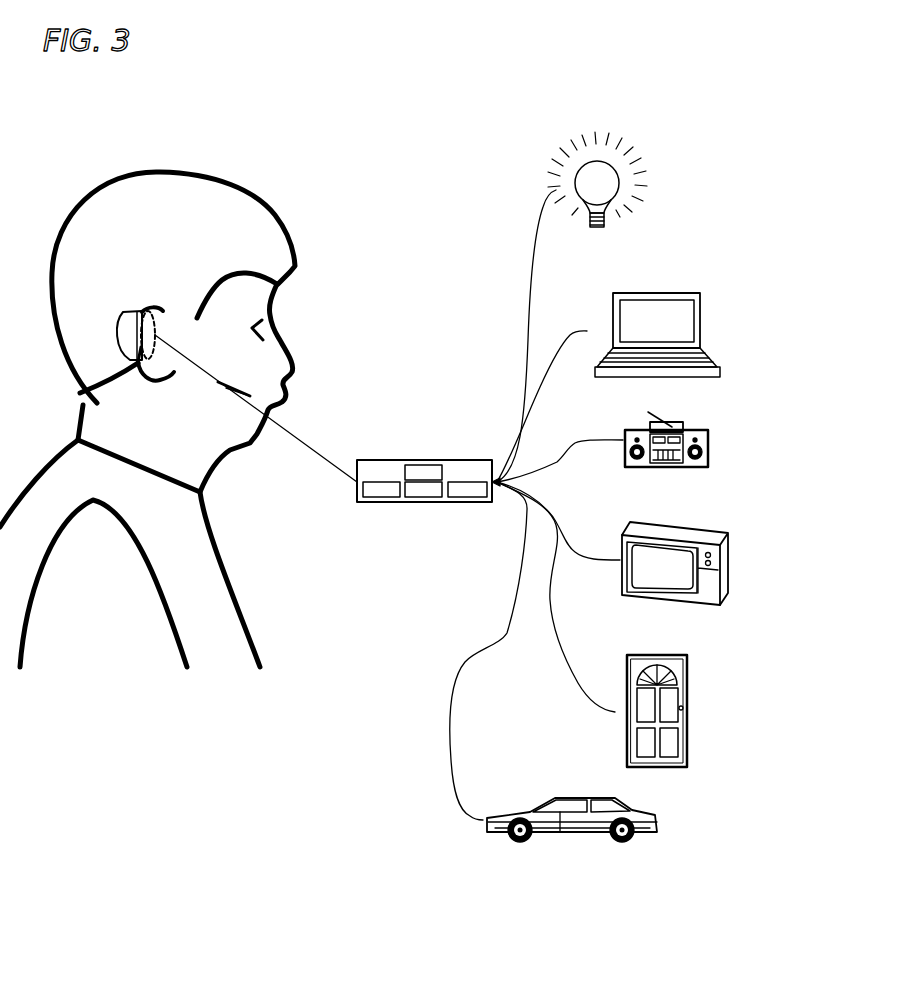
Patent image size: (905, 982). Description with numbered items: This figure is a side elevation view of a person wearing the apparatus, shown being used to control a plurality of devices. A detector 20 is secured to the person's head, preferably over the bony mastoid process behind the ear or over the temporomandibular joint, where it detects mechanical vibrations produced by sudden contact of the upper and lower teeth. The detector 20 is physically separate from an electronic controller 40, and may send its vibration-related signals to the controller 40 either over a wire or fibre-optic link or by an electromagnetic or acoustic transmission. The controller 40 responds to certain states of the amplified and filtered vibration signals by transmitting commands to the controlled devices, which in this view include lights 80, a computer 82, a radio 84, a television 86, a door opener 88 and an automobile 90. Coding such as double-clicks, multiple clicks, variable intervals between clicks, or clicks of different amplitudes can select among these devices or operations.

The detector 20 is at (130, 320).
The electronic controller 40 is at (428, 460).
The lights 80 is at (642, 190).
The computer 82 is at (723, 333).
The radio 84 is at (710, 438).
The television 86 is at (725, 563).
The door opener 88 is at (700, 710).
The automobile 90 is at (667, 820).